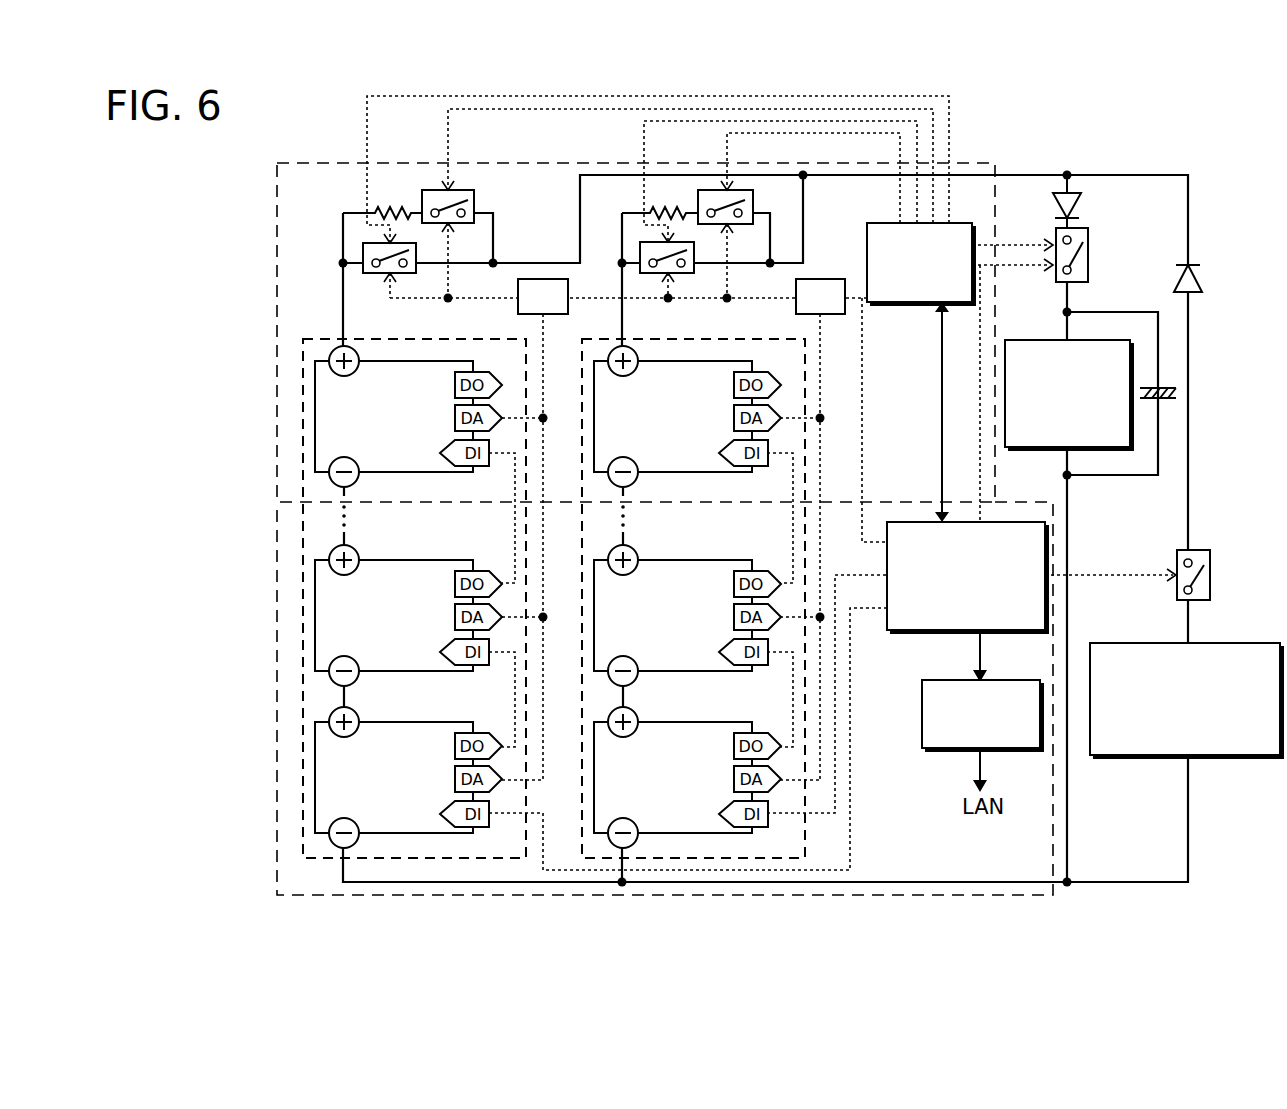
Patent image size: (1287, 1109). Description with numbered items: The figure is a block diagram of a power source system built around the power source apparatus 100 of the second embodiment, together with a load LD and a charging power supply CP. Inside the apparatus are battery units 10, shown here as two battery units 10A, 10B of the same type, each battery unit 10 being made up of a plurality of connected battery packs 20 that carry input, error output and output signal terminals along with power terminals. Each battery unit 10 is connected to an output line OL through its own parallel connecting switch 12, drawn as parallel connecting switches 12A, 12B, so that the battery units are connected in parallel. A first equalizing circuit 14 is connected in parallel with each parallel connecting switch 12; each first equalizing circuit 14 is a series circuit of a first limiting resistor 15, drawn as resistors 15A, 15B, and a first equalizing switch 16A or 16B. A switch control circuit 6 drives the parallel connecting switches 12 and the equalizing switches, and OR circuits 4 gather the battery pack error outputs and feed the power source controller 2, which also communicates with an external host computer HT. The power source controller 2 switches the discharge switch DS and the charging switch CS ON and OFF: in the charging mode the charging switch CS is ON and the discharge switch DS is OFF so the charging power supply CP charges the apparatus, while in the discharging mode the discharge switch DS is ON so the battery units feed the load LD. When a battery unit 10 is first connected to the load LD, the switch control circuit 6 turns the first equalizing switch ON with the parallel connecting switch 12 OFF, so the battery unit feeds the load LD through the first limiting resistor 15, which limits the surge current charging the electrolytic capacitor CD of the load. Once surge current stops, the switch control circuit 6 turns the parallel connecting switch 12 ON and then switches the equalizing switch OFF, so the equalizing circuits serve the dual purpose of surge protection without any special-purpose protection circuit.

The power source apparatus 100 is at (990, 163).
The switch control circuit 6 is at (950, 224).
The first equalizing circuit 14 is at (584, 173).
The first limiting resistor 15 is at (474, 173).
The first limiting resistor 15A is at (378, 204).
The first limiting resistor 15B is at (660, 210).
The first equalizing switch 16A is at (476, 200).
The first equalizing switch 16B is at (733, 190).
The parallel connecting switch 12 is at (487, 258).
The parallel connecting switch 12A is at (362, 252).
The parallel connecting switch 12B is at (640, 276).
The OR circuit 4 is at (516, 302).
The power source controller 2 is at (922, 522).
The battery pack 20 is at (716, 722).
The battery unit 10 is at (554, 658).
The battery unit 10A is at (438, 858).
The battery unit 10B is at (693, 637).
The discharge switch DS is at (1092, 265).
The charging switch CS is at (1211, 560).
The electrolytic capacitor CD is at (1168, 388).
The load LD is at (1047, 449).
The output line OL is at (806, 178).
The charging power supply CP is at (1210, 758).
The host computer HT is at (995, 750).